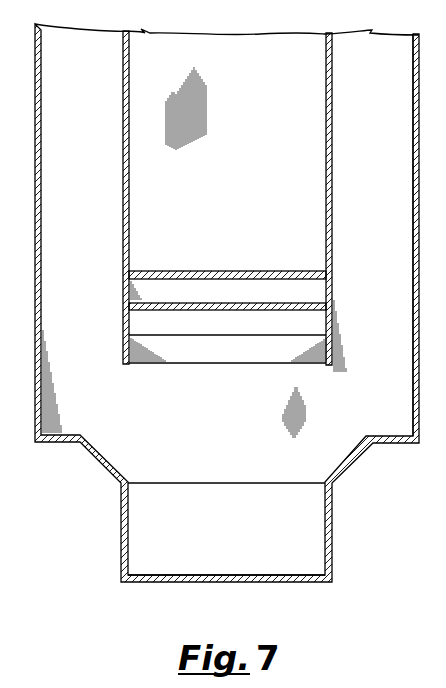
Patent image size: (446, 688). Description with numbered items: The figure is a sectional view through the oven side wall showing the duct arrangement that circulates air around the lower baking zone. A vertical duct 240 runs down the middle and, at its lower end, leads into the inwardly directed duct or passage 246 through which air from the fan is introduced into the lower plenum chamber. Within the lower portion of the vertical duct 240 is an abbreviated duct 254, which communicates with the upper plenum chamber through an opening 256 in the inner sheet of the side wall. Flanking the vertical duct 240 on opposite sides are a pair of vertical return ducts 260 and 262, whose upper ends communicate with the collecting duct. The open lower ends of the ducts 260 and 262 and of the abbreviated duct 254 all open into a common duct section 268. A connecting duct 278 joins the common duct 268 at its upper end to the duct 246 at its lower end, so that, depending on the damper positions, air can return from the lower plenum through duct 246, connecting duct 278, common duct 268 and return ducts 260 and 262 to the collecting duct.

The vertical duct 240 is at (205, 177).
The inwardly directed duct or passage 246 is at (238, 536).
The abbreviated duct 254 is at (120, 343).
The opening 256 is at (283, 325).
The vertical duct 260 is at (95, 115).
The vertical duct 262 is at (386, 115).
The common duct section 268 is at (238, 409).
The connecting duct 278 is at (238, 470).